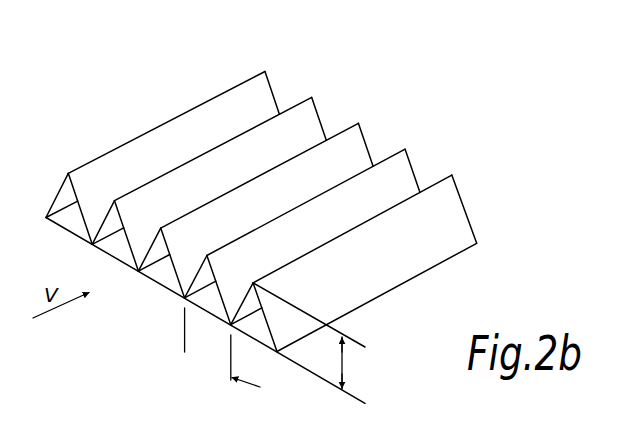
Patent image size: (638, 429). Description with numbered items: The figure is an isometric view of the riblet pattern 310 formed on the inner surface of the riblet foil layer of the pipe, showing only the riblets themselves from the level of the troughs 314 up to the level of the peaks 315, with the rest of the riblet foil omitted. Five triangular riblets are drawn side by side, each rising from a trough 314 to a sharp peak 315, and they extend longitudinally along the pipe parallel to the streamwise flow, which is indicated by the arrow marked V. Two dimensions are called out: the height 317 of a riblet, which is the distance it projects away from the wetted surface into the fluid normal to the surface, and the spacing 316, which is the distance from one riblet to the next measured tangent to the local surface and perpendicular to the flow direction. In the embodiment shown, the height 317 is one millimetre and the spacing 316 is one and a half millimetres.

The riblet pattern 310 is at (261, 219).
The troughs 314 is at (138, 272).
The peak 315 is at (208, 97).
The spacing 316 is at (183, 340).
The height 317 is at (342, 362).